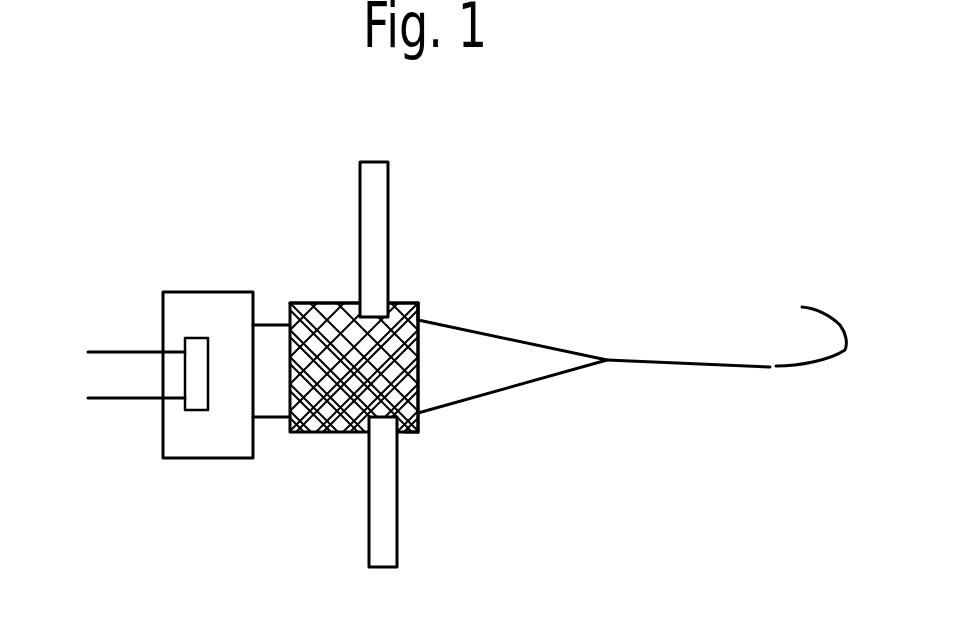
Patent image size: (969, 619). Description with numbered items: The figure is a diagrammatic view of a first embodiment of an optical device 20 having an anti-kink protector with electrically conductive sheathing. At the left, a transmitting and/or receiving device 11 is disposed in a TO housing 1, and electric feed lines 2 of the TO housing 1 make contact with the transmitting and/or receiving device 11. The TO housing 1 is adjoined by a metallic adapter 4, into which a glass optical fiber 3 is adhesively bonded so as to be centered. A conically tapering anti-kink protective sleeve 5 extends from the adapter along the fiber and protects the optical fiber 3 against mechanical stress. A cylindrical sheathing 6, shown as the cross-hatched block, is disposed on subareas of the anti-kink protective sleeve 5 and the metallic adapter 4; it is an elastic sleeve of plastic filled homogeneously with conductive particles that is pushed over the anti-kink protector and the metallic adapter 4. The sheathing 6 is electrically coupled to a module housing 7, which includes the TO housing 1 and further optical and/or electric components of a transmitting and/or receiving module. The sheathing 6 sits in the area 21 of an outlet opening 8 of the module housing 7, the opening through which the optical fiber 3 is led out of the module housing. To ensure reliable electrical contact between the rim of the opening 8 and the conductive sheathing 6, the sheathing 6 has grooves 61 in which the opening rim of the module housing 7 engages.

The TO housing 1 is at (205, 443).
The transmitting and/or receiving device 11 is at (200, 345).
The electric feed lines 2 is at (122, 398).
The metallic adapter 4 is at (268, 333).
The cylindrical sheathing 6 is at (320, 432).
The module housing 7 is at (390, 502).
The grooves 61 is at (400, 302).
The area 21 is at (427, 288).
The anti-kink protective sleeve 5 is at (471, 344).
The optical fiber 3 is at (678, 370).
The outlet opening 8 is at (418, 422).
The optical device 20 is at (296, 227).